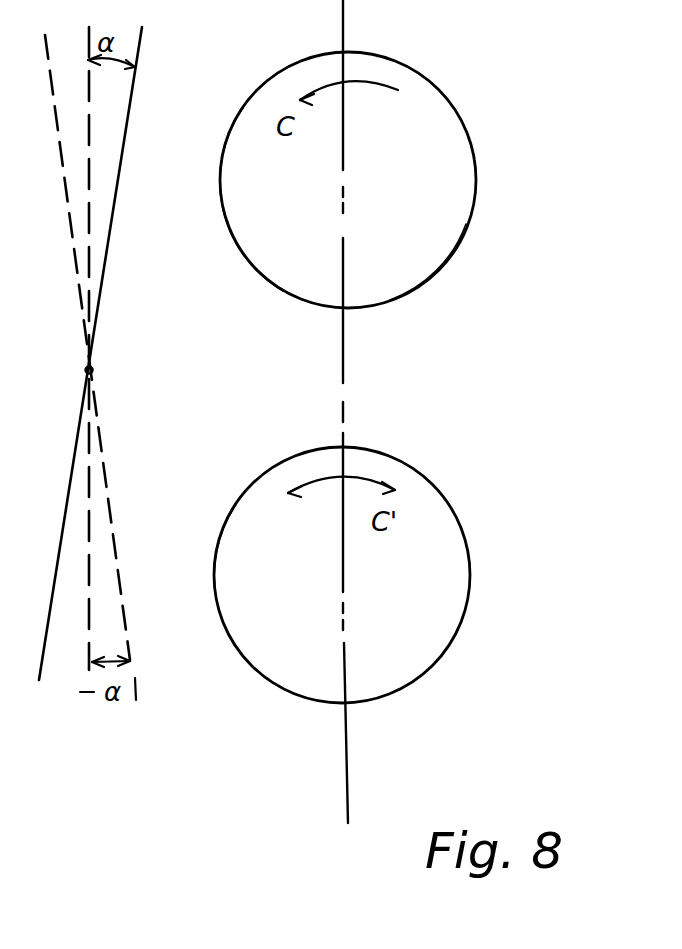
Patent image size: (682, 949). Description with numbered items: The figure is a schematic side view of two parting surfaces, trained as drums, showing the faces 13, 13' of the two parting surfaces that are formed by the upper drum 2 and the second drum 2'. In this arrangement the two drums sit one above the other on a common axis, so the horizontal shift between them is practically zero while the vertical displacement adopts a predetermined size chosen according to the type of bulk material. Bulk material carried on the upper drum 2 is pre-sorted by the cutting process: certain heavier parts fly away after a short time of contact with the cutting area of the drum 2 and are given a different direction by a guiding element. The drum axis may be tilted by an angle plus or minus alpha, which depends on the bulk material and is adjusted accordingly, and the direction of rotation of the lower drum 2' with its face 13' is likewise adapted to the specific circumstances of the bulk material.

The upper drum 2 is at (365, 167).
The face of the parting surface 13 is at (384, 204).
The drum 2' is at (352, 555).
The face of the parting surface 13' is at (369, 578).